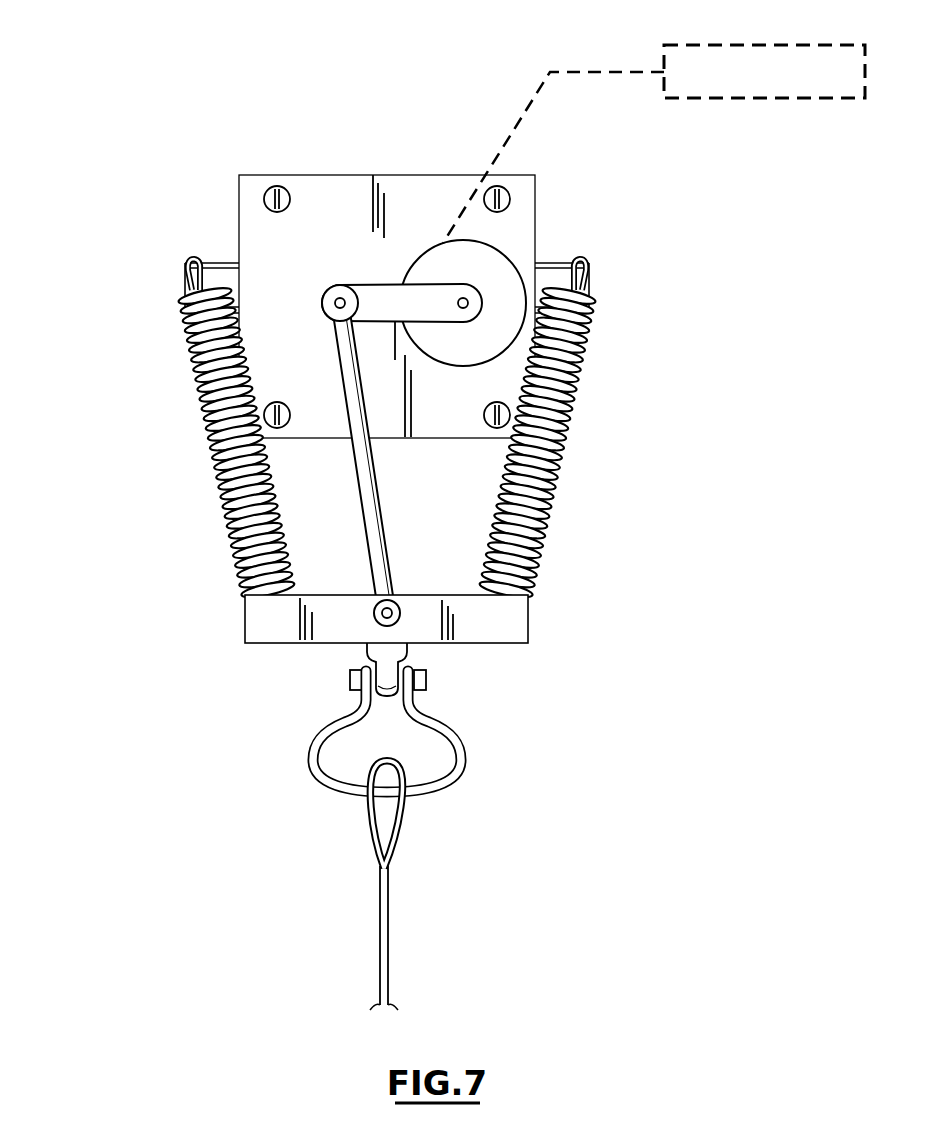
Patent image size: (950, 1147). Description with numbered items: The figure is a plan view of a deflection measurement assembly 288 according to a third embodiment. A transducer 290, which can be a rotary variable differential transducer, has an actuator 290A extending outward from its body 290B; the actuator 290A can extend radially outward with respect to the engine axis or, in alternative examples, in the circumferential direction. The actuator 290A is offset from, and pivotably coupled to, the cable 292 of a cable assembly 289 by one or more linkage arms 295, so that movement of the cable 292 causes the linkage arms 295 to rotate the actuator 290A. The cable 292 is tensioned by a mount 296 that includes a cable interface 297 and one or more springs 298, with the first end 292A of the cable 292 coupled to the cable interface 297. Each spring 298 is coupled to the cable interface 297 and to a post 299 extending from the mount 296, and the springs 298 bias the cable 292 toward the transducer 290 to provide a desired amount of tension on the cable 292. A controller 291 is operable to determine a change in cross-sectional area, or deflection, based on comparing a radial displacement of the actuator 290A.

The deflection measurement assembly 288 is at (124, 120).
The cable assembly 289 is at (401, 842).
The transducer 290 is at (508, 282).
The actuator 290A is at (463, 309).
The body 290B is at (505, 272).
The controller 291 is at (747, 45).
The cable 292 is at (389, 983).
The first end of the cable 292A is at (389, 914).
The linkage arms 295 is at (412, 435).
The mount 296 is at (399, 184).
The cable interface 297 is at (530, 618).
The springs 298 is at (215, 460).
The posts 299 is at (183, 275).